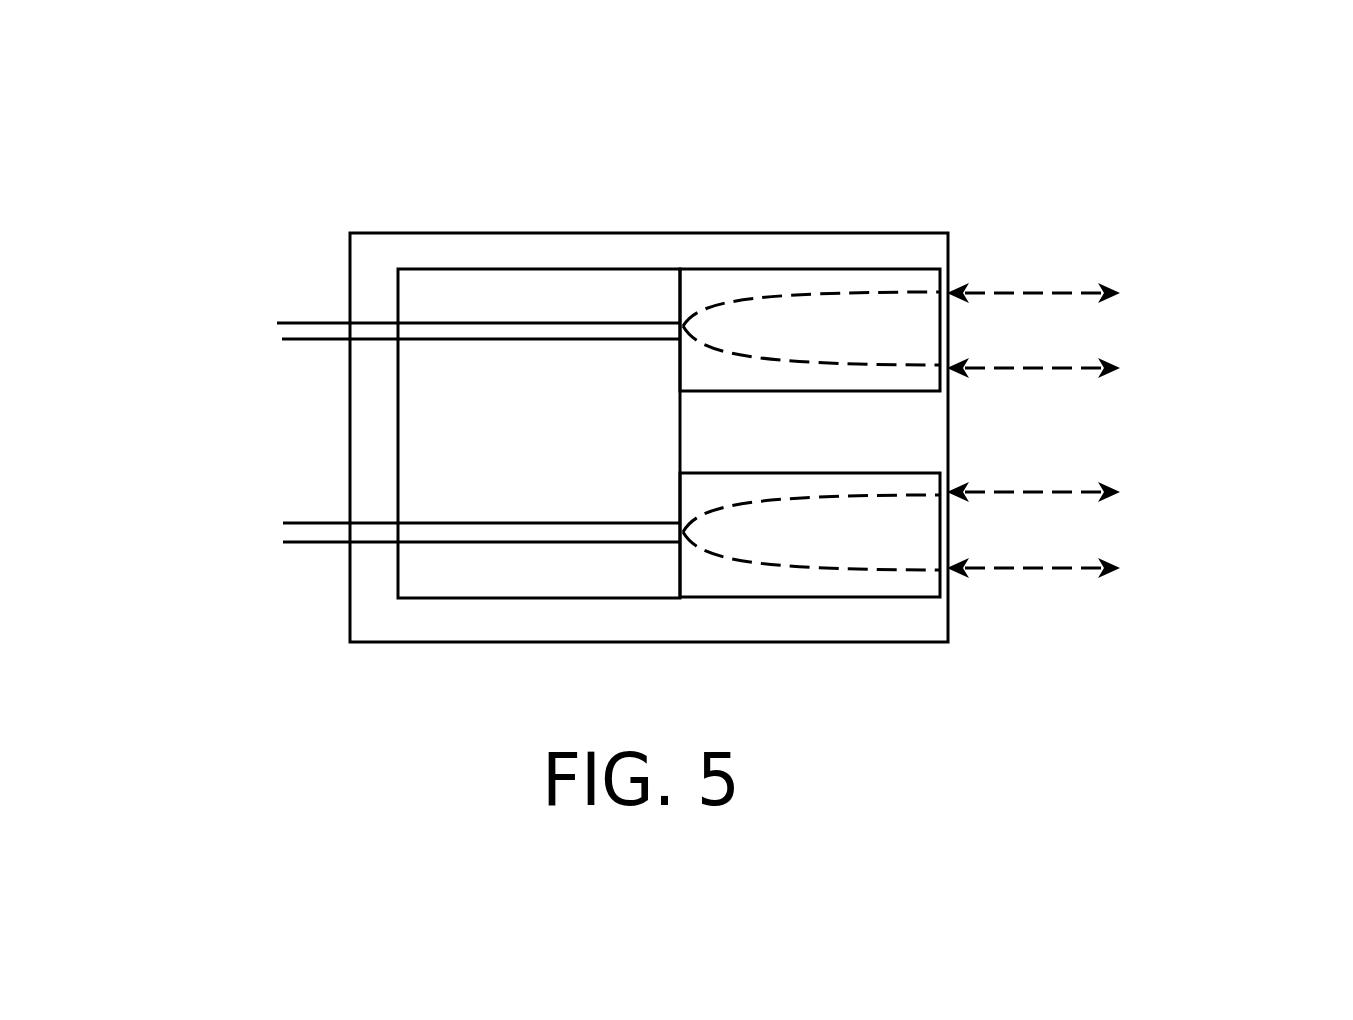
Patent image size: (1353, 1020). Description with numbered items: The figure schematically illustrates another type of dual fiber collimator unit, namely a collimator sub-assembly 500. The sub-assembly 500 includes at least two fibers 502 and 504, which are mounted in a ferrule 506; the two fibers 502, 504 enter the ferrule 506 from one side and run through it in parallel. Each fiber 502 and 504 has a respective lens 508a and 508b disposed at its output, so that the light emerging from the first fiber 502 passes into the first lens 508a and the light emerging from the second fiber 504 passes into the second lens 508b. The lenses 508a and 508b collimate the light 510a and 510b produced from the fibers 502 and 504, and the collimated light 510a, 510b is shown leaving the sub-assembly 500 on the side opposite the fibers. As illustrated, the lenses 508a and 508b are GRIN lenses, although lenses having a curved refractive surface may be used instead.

The collimator sub-assembly 500 is at (607, 230).
The fiber 502 is at (325, 322).
The fiber 504 is at (317, 547).
The ferrule 506 is at (398, 422).
The lens 508a is at (848, 265).
The lens 508b is at (833, 598).
The light 510a is at (1070, 293).
The light 510b is at (1075, 567).